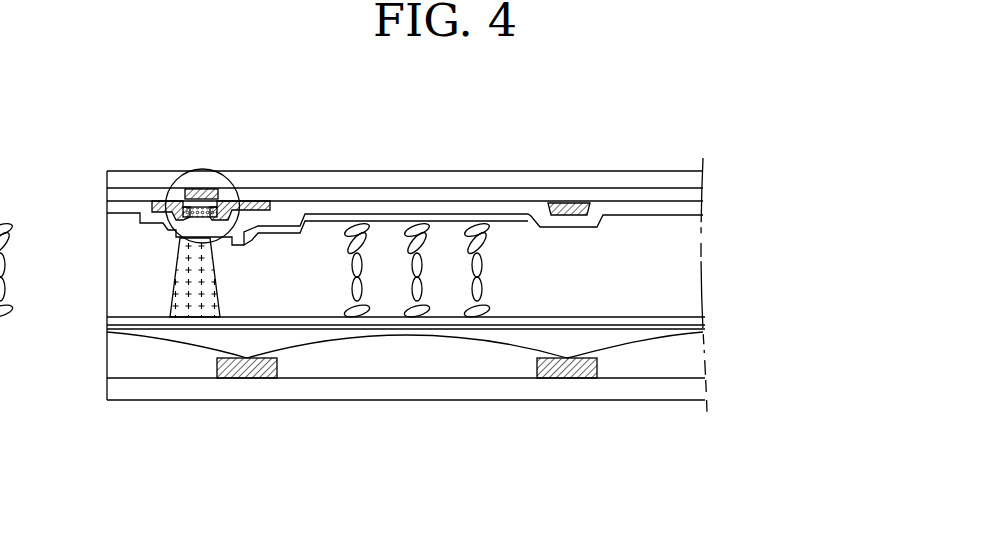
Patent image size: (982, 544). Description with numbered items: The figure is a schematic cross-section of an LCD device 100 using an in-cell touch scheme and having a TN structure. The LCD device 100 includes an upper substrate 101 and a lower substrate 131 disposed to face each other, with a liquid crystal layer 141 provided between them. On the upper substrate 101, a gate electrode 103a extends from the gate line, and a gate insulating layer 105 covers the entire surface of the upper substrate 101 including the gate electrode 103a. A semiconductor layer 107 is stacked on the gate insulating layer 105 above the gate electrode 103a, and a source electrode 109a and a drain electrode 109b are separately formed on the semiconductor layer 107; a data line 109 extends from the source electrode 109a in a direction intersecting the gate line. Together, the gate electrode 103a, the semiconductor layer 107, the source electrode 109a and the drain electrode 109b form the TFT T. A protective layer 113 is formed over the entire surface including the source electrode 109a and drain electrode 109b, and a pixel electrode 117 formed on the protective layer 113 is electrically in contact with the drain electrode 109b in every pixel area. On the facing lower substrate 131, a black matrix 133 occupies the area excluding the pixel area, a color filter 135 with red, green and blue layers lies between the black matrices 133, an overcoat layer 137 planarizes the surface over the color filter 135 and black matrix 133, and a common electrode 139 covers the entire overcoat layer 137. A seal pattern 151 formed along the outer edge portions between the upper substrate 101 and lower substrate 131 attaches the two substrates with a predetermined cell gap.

The LCD device 100 is at (716, 149).
The upper substrate 101 is at (700, 178).
The gate electrode 103a is at (203, 167).
The gate insulating layer 105 is at (698, 197).
The semiconductor layer 107 is at (218, 208).
The source electrode 109a is at (164, 201).
The drain electrode 109b is at (258, 204).
The data line 109 is at (567, 204).
The protective layer 113 is at (697, 208).
The pixel electrode 117 is at (352, 224).
The lower substrate 131 is at (706, 392).
The black matrix 133 is at (567, 379).
The color filter 135 is at (706, 357).
The overcoat layer 137 is at (607, 338).
The common electrode 139 is at (706, 321).
The liquid crystal layer 141 is at (697, 286).
The seal pattern 151 is at (187, 282).
The TFT T is at (219, 167).